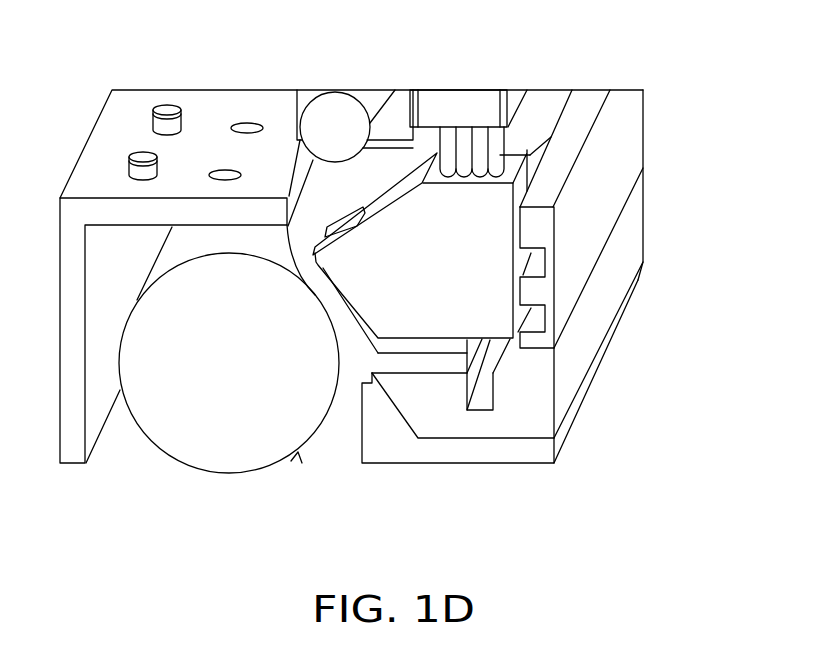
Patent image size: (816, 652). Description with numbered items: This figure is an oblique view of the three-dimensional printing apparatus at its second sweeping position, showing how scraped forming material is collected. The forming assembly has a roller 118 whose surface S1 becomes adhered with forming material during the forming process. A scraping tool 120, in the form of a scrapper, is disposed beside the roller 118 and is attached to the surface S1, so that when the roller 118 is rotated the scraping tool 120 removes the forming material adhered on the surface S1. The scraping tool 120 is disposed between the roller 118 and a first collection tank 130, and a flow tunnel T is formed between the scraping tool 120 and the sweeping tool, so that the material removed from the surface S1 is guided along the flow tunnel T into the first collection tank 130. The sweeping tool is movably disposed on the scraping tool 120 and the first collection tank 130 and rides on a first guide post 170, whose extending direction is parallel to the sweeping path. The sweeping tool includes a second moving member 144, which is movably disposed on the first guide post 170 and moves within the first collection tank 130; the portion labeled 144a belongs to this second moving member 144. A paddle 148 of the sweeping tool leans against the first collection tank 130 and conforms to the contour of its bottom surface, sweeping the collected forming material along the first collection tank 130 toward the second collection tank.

The roller 118 is at (217, 403).
The surface of the roller S1 is at (298, 453).
The flow tunnel T is at (287, 198).
The first guide post 170 is at (337, 120).
The fingers of guide member 144a is at (467, 148).
The second moving member 144 is at (467, 255).
The first collection tank 130 is at (537, 393).
The scraping tool 120 is at (371, 372).
The paddle 148 is at (422, 362).